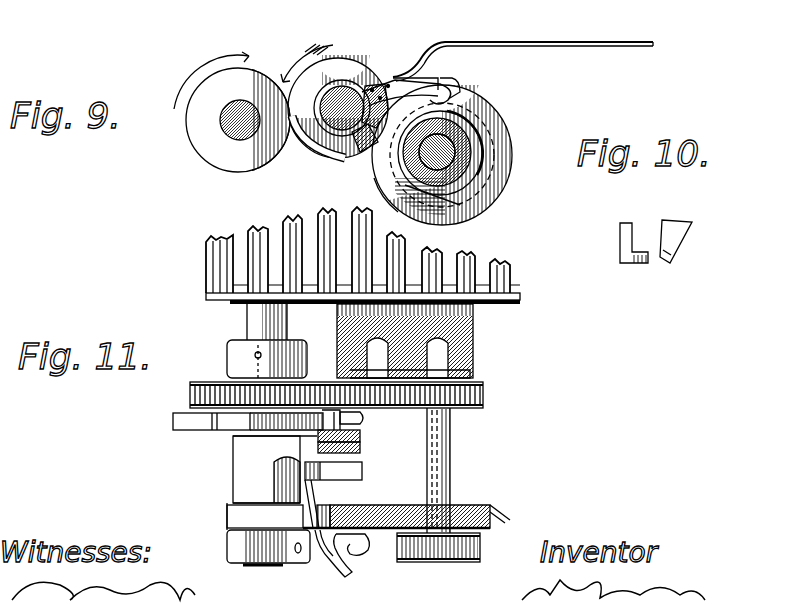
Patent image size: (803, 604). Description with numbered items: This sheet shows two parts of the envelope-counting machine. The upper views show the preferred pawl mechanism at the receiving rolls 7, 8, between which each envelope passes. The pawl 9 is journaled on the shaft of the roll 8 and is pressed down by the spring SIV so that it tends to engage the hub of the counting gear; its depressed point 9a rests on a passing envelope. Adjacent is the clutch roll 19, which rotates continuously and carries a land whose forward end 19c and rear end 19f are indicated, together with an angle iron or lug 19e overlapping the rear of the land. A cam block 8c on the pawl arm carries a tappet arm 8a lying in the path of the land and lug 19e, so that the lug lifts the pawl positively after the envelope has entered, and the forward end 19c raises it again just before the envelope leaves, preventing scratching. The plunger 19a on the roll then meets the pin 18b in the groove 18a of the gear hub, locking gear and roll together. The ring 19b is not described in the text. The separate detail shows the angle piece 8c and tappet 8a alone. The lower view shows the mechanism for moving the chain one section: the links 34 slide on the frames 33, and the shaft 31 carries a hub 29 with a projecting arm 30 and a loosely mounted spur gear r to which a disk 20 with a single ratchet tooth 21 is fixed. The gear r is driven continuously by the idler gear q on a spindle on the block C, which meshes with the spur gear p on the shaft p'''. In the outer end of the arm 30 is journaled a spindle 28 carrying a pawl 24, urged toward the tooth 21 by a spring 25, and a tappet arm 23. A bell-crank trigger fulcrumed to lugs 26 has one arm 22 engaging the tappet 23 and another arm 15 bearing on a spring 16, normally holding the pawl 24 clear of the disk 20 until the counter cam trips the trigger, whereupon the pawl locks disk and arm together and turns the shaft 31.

In FIG. 9, the receiving roll 7 is at (232, 112).
In FIG. 9, the receiving roll 8 is at (342, 58).
In FIG. 9, the tappet arm 8a is at (350, 142).
In FIG. 10, the tappet arm 8a is at (635, 255).
In FIG. 10, the cam block 8c is at (660, 255).
In FIG. 9, the pawl 9 is at (334, 178).
In FIG. 9, the point of the pawl 9a is at (292, 142).
In FIG. 9, the roll 19 is at (503, 178).
In FIG. 9, the plunger 19a is at (465, 203).
In FIG. 9, the ring 19b is at (505, 130).
In FIG. 9, the forward end of the land 19c is at (370, 157).
In FIG. 9, the angle iron or lug 19e is at (427, 88).
In FIG. 9, the rear end of the land 19f is at (460, 85).
In FIG. 9, the groove 18a is at (472, 127).
In FIG. 9, the pin 18b is at (432, 198).
In FIG. 9, the spring SIV is at (523, 49).
In FIG. 11, the links 34 is at (363, 250).
In FIG. 11, the frames 33 is at (228, 297).
In FIG. 11, the shaft 31 is at (250, 317).
In FIG. 11, the block C is at (473, 333).
In FIG. 11, the spur gear r is at (192, 393).
In FIG. 11, the spur gear p is at (456, 486).
In FIG. 11, the shaft p''' is at (462, 470).
In FIG. 11, the disk 20 is at (178, 427).
In FIG. 11, the ratchet tooth 21 is at (212, 435).
In FIG. 11, the hub 29 is at (272, 483).
In FIG. 11, the arm 30 is at (289, 470).
In FIG. 11, the pawl 24 is at (360, 415).
In FIG. 11, the spring 25 is at (363, 437).
In FIG. 11, the spindle 28 is at (363, 450).
In FIG. 11, the idler gear q is at (405, 410).
In FIG. 11, the tappet arm 23 is at (357, 475).
In FIG. 11, the arm of the trigger 22 is at (322, 493).
In FIG. 11, the lugs 26 is at (302, 558).
In FIG. 11, the arm of the trigger 15 is at (335, 568).
In FIG. 11, the spring 16 is at (355, 555).